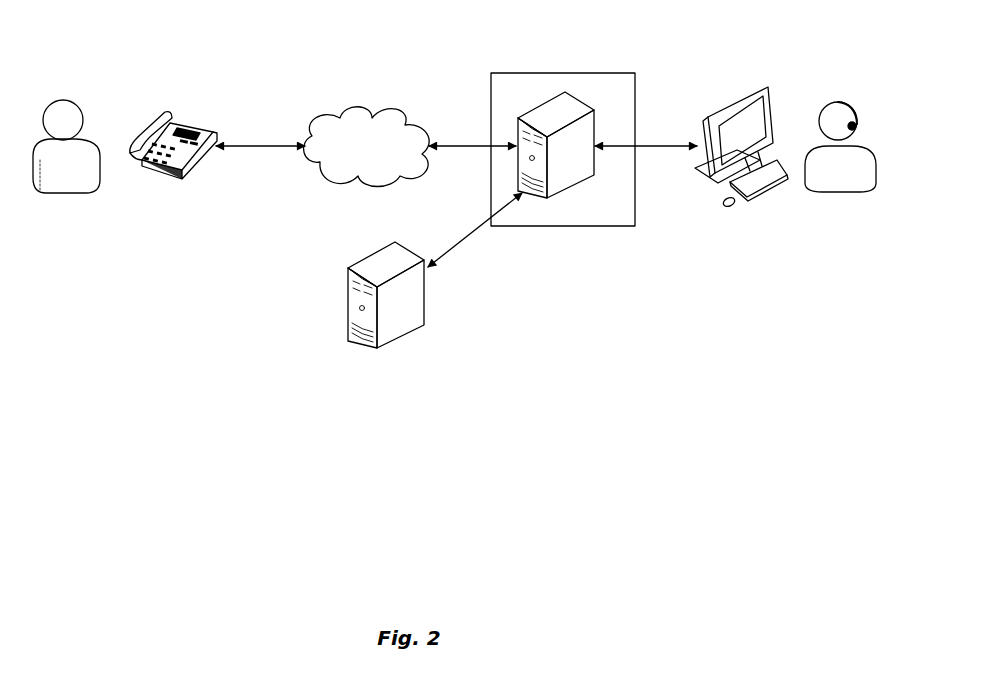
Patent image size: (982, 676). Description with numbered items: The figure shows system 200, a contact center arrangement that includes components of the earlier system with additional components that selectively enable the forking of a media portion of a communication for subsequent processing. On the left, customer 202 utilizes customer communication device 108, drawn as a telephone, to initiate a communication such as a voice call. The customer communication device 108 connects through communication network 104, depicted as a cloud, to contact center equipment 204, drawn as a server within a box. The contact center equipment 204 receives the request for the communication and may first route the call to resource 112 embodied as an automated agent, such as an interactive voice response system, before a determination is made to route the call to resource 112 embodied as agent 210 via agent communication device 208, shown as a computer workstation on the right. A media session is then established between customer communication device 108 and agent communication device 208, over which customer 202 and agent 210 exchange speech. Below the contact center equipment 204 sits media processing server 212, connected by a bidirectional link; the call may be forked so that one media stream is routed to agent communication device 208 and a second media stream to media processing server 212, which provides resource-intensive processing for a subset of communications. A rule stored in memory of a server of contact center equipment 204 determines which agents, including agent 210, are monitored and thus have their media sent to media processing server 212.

The system 200 is at (890, 47).
The customer 202 is at (88, 136).
The customer communication device 108 is at (202, 125).
The communication network 104 is at (388, 112).
The contact center equipment 204 is at (595, 73).
The media processing server 212 is at (424, 313).
The agent communication device 208 is at (769, 95).
The agent 210 is at (872, 153).
The resource 112 is at (843, 245).